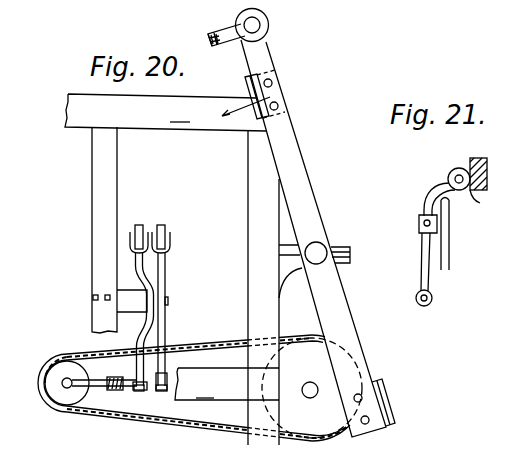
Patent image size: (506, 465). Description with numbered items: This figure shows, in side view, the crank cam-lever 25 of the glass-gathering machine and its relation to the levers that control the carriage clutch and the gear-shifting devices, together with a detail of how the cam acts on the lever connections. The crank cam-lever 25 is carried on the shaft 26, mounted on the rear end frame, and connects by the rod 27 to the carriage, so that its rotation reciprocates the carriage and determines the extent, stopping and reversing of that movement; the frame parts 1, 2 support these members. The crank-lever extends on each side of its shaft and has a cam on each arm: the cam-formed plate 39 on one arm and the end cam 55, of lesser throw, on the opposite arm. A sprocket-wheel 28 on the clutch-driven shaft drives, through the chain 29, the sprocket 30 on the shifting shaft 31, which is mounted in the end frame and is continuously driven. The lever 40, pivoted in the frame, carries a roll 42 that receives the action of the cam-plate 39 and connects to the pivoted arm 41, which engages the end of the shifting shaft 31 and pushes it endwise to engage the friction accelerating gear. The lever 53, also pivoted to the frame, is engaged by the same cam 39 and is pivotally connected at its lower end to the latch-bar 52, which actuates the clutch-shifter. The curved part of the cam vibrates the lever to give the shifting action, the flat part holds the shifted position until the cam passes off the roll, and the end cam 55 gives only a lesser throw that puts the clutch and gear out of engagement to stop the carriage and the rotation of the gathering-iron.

In FIG. 20, the table 1 is at (172, 247).
In FIG. 20, the table legs 2 is at (197, 286).
In FIG. 20, the crank cam-lever 25 is at (302, 172).
In FIG. 20, the crank-shaft 26 is at (320, 247).
In FIG. 21, the crank-shaft 26 is at (478, 157).
In FIG. 20, the rod 27 is at (223, 32).
In FIG. 20, the sprocket-wheel 28 is at (312, 388).
In FIG. 20, the chain 29 is at (228, 346).
In FIG. 20, the sprocket 30 is at (47, 380).
In FIG. 20, the shifting shaft 31 is at (318, 397).
In FIG. 20, the cam-formed plate 39 is at (245, 86).
In FIG. 21, the cam-formed plate 39 is at (468, 162).
In FIG. 20, the lever 40 is at (132, 311).
In FIG. 20, the pivoted arm 41 is at (113, 381).
In FIG. 20, the roll 42 is at (137, 230).
In FIG. 20, the latch-bar 52 is at (168, 374).
In FIG. 20, the lever 53 is at (165, 268).
In FIG. 21, the lever 53 is at (433, 185).
In FIG. 20, the end cam 55 is at (390, 397).